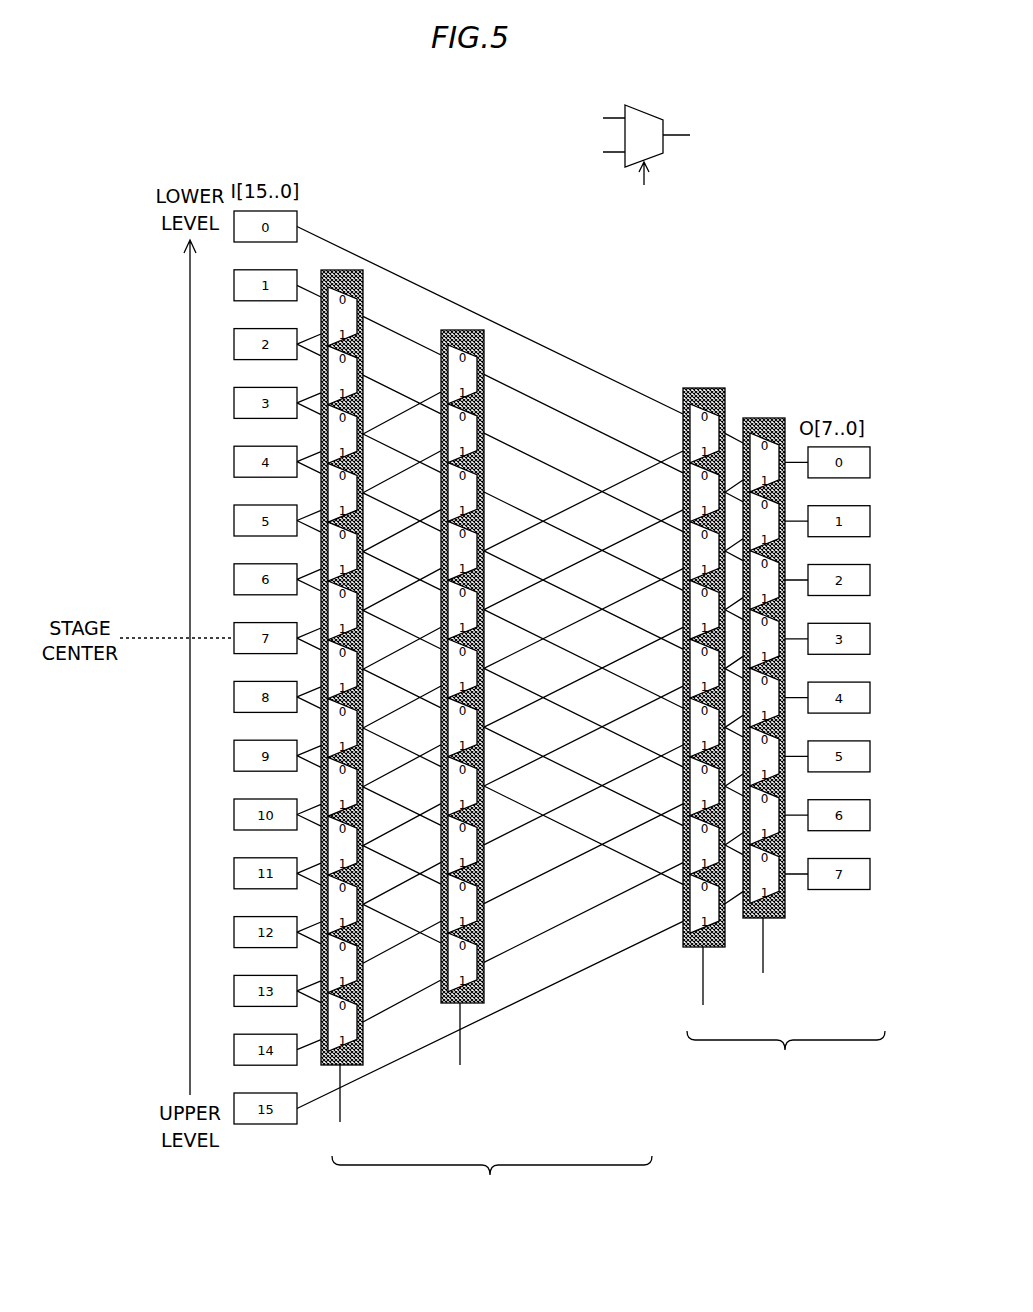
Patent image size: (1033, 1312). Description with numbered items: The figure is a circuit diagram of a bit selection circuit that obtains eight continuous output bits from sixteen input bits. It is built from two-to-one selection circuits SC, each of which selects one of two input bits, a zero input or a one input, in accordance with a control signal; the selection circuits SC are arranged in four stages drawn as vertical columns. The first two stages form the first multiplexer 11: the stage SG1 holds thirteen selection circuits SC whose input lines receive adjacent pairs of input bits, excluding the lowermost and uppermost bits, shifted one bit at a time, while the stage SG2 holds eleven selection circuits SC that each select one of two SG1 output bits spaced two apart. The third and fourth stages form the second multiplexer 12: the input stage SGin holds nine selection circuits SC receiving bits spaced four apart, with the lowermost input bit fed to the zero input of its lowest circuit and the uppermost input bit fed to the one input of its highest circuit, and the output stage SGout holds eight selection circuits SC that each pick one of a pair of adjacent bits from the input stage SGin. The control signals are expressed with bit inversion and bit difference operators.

The first multiplexer 11 is at (338, 174).
The second multiplexer 12 is at (857, 279).
The 2:1 selection circuit SC is at (648, 112).
The stage SG1 is at (348, 270).
The stage SG2 is at (463, 330).
The input stage SGin is at (695, 388).
The output stage SGout is at (766, 418).